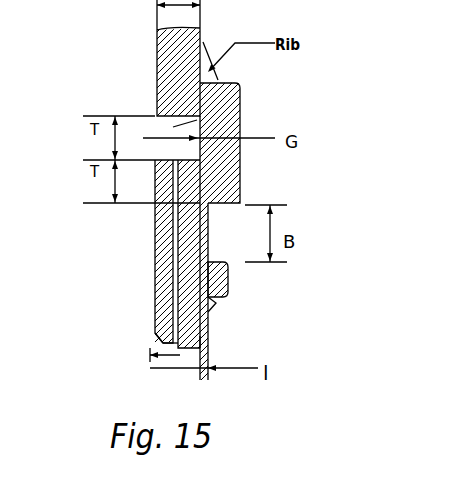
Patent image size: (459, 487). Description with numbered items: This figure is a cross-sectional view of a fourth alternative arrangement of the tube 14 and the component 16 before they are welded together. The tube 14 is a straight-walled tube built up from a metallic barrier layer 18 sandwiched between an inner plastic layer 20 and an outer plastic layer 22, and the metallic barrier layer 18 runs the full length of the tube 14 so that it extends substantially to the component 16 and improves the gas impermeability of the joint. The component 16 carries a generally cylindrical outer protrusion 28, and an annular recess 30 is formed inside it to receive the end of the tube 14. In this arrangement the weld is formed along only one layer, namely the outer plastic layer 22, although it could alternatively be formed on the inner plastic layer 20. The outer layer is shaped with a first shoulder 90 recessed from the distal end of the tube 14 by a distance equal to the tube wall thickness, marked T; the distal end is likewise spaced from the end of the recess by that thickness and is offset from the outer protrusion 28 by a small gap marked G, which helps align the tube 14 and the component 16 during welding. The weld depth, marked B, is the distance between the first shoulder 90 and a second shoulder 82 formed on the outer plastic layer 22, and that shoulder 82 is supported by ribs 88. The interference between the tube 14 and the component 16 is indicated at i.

The component 16 is at (145, 43).
The tube 14 is at (140, 270).
The annular recess 30 is at (242, 95).
The outer protrusion 28 is at (240, 166).
The first shoulder 90 is at (210, 214).
The shoulder 82 is at (229, 283).
The ribs 88 is at (217, 305).
The inner plastic layer 20 is at (150, 325).
The metallic barrier layer 18 is at (152, 346).
The outer plastic layer 22 is at (208, 336).